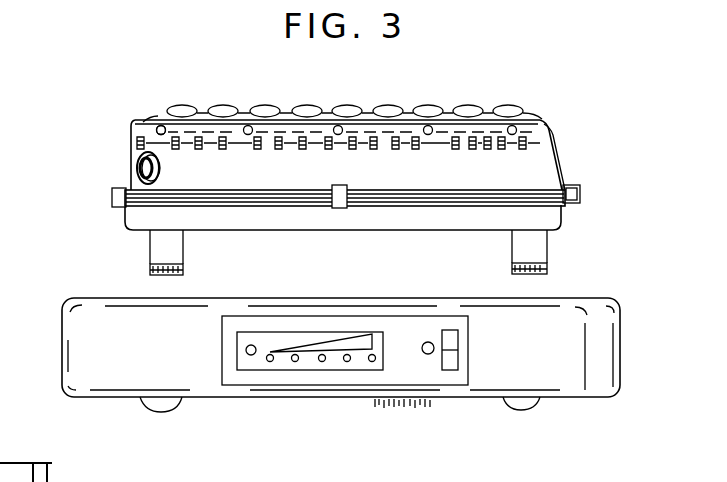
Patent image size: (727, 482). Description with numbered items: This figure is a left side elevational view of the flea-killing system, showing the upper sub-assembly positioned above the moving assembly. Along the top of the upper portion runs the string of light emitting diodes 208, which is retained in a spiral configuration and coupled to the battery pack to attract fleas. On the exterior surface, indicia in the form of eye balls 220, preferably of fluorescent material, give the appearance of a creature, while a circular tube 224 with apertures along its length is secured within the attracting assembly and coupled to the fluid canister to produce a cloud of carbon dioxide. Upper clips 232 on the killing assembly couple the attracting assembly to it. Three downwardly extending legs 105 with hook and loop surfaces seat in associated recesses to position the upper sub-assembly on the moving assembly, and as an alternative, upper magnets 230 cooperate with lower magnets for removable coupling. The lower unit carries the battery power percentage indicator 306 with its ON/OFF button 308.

The downwardly extending legs 105 is at (514, 245).
The string of light emitting diodes 208 is at (466, 103).
The eye balls 220 is at (134, 167).
The tube 224 is at (154, 139).
The upper magnets 230 is at (511, 272).
The upper clips 232 is at (581, 195).
The battery power percentage indicator 306 is at (310, 360).
The ON/OFF button 308 is at (448, 360).